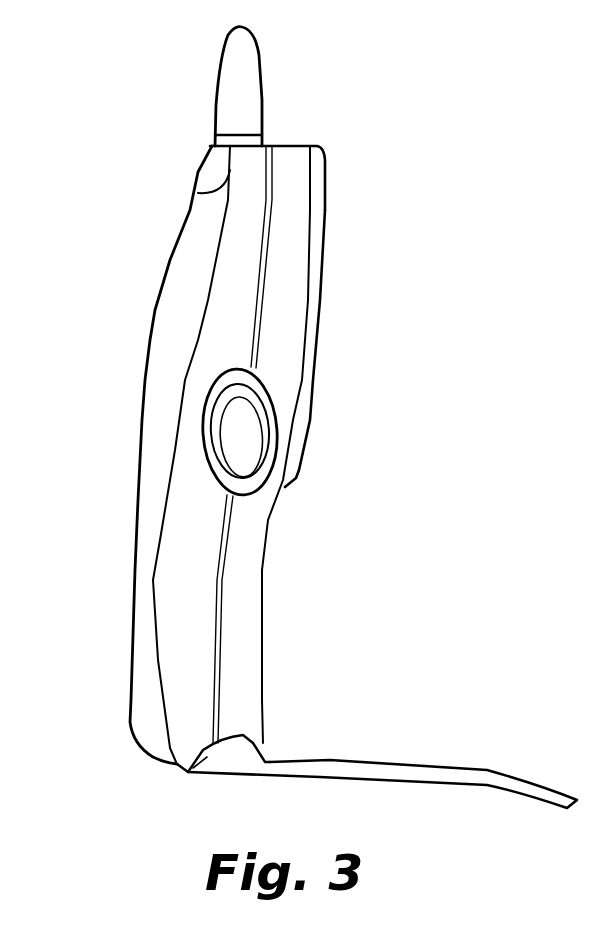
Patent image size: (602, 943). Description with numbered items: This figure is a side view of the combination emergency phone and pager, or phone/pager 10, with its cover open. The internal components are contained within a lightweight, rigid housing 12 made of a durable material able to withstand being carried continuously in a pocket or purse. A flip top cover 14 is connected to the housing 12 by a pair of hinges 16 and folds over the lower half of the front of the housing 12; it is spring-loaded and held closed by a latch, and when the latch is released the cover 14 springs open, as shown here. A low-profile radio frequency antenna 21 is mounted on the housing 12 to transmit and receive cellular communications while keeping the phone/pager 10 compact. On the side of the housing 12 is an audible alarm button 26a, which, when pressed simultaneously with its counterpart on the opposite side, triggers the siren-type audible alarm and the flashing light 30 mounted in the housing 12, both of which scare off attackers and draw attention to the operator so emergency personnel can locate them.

The phone/pager 10 is at (392, 178).
The housing 12 is at (153, 313).
The flip top cover 14 is at (445, 782).
The hinges 16 is at (208, 760).
The radio frequency antenna 21 is at (262, 77).
The audible alarm button 26a is at (217, 432).
The flashing light 30 is at (198, 172).